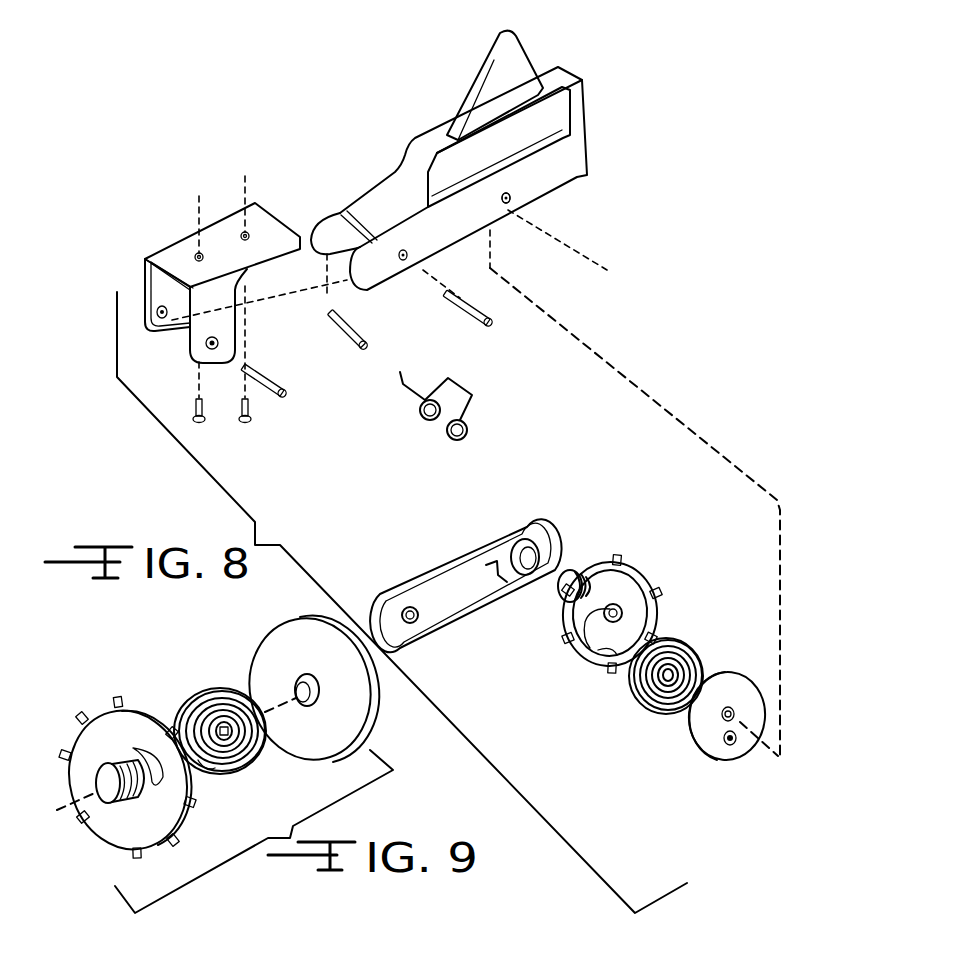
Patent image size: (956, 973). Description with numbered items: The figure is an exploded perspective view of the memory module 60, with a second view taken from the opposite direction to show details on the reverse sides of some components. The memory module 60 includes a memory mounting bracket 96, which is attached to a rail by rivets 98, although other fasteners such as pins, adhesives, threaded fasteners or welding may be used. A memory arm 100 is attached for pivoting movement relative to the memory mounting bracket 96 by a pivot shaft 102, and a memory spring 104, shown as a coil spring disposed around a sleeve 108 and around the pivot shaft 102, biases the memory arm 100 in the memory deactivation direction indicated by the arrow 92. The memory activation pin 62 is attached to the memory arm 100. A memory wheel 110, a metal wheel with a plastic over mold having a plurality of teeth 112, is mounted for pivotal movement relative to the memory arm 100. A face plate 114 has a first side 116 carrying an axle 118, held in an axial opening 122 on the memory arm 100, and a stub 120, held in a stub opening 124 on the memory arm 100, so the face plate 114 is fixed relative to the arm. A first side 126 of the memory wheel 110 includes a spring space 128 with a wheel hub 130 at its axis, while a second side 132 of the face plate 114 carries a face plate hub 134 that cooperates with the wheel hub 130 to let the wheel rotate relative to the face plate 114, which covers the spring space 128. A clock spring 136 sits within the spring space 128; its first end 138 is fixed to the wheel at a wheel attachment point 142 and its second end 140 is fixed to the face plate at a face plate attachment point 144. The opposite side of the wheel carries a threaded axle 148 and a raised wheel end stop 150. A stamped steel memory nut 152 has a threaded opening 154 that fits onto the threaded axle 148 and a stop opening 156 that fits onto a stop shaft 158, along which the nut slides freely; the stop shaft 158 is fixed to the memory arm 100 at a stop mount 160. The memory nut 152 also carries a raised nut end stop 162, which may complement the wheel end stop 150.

In FIG. 8, the memory module 60 is at (180, 98).
In FIG. 8, the memory activation pin 62 is at (482, 75).
In FIG. 8, the arrow 92 is at (360, 372).
In FIG. 8, the memory mounting bracket 96 is at (168, 257).
In FIG. 8, the rivets 98 is at (204, 416).
In FIG. 8, the memory arm 100 is at (372, 198).
In FIG. 8, the pivot shaft 102 is at (272, 382).
In FIG. 8, the memory spring 104 is at (474, 388).
In FIG. 8, the sleeve 108 is at (342, 332).
In FIG. 9, the memory wheel 110 is at (90, 744).
In FIG. 9, the teeth 112 is at (80, 823).
In FIG. 9, the face plate 114 is at (733, 673).
In FIG. 9, the first side 116 is at (752, 704).
In FIG. 9, the axle 118 is at (735, 712).
In FIG. 9, the stub 120 is at (735, 745).
In FIG. 8, the axial opening 122 is at (513, 196).
In FIG. 8, the stub opening 124 is at (509, 208).
In FIG. 9, the first side 126 is at (576, 570).
In FIG. 9, the spring space 128 is at (617, 601).
In FIG. 9, the wheel hub 130 is at (578, 660).
In FIG. 9, the second side 132 is at (322, 657).
In FIG. 9, the face plate hub 134 is at (317, 678).
In FIG. 9, the clock spring 136 is at (263, 757).
In FIG. 9, the first end 138 is at (203, 762).
In FIG. 9, the second end 140 is at (222, 730).
In FIG. 9, the wheel attachment point 142 is at (600, 658).
In FIG. 9, the face plate attachment point 144 is at (318, 705).
In FIG. 9, the threaded axle 148 is at (555, 588).
In FIG. 9, the wheel end stop 150 is at (146, 790).
In FIG. 9, the memory nut 152 is at (440, 567).
In FIG. 9, the threaded opening 154 is at (530, 527).
In FIG. 9, the stop opening 156 is at (411, 623).
In FIG. 8, the stop shaft 158 is at (487, 311).
In FIG. 8, the stop mount 160 is at (405, 250).
In FIG. 9, the nut end stop 162 is at (493, 560).